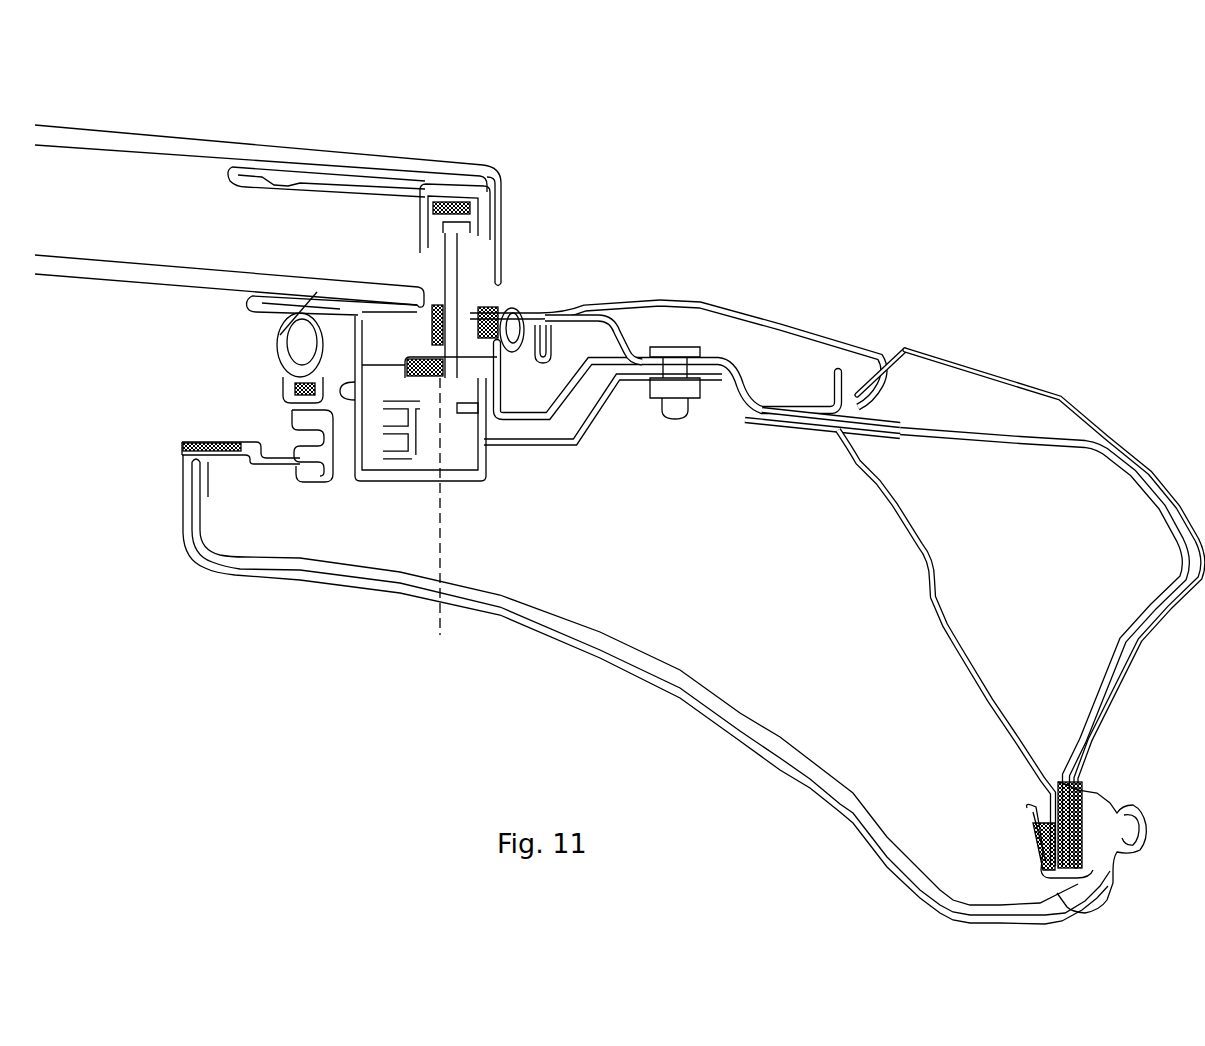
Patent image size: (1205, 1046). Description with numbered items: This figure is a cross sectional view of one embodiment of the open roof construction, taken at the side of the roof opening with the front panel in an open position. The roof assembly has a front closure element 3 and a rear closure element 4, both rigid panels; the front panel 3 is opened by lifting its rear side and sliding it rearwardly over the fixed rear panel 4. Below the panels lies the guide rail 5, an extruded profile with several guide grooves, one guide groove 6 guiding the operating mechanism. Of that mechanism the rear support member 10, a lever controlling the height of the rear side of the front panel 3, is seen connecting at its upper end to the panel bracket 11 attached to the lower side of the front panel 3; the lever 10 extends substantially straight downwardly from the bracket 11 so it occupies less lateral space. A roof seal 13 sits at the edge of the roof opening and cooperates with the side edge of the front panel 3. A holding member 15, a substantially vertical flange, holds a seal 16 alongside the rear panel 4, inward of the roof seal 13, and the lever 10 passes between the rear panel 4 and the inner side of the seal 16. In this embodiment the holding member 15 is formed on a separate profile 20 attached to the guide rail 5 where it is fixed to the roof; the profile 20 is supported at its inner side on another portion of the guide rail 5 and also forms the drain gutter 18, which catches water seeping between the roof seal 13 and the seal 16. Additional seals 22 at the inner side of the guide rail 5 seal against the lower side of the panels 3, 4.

The front closure element 3 is at (300, 158).
The rear closure element 4 is at (180, 281).
The guide rail 5 is at (441, 445).
The guide groove 6 is at (453, 437).
The rear support member 10 is at (450, 273).
The panel bracket 11 is at (428, 185).
The roof seal 13 is at (540, 297).
The holding member 15 is at (560, 307).
The seal 16 is at (462, 303).
The drain gutter 18 is at (595, 417).
The separate profile 20 is at (538, 418).
The additional seals 22 is at (343, 332).